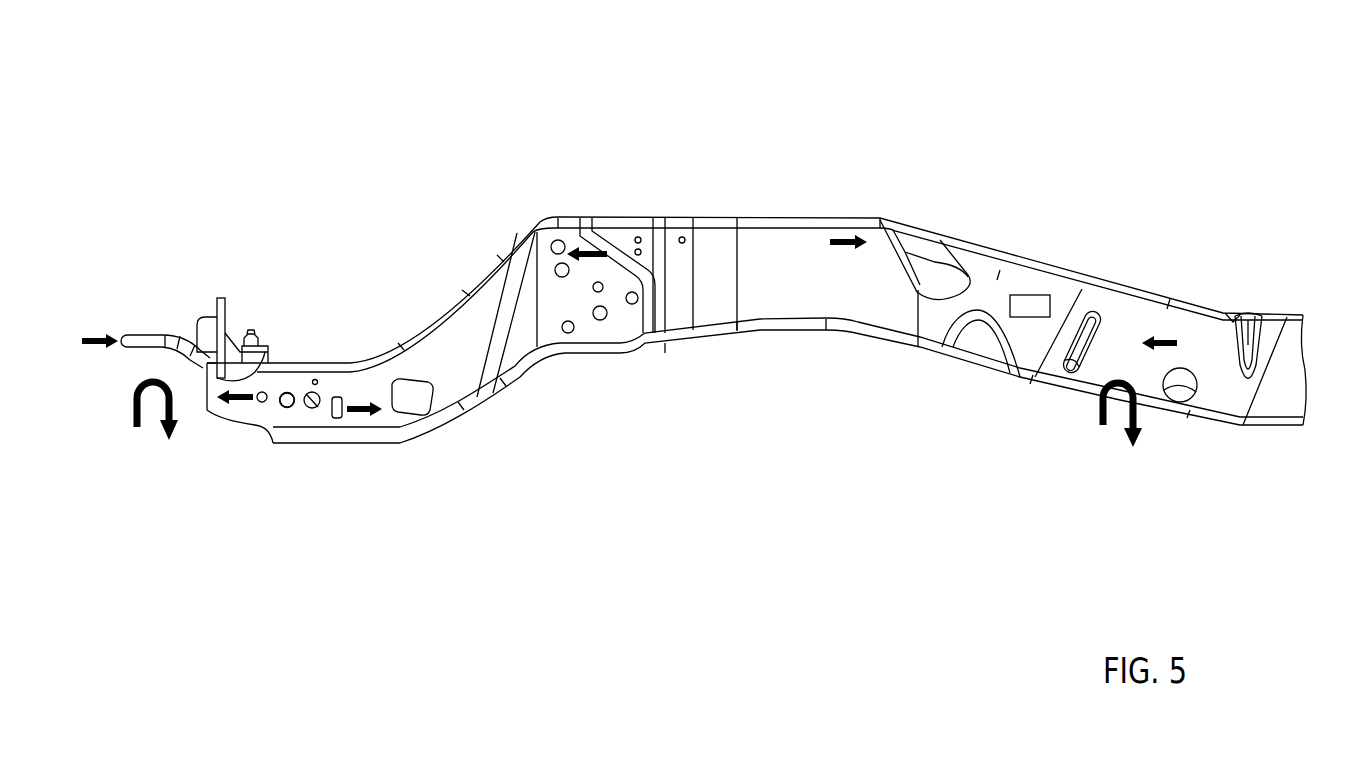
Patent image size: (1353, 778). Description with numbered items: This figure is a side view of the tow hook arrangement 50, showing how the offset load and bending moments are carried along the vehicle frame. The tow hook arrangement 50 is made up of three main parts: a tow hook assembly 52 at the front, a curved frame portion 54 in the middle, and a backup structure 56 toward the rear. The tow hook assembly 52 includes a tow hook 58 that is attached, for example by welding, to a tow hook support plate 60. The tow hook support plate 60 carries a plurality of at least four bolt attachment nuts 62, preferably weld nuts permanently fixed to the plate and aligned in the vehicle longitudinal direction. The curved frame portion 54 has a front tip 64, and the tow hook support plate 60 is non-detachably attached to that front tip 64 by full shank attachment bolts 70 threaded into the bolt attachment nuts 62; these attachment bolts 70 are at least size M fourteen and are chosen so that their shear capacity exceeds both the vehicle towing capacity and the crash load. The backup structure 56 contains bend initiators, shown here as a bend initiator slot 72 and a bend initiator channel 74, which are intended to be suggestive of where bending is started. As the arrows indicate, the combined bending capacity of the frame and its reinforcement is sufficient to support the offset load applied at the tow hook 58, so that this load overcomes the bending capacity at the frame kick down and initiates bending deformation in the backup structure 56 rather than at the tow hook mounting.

The tow hook arrangement 50 is at (1203, 122).
The tow hook assembly 52 is at (157, 238).
The curved frame portion 54 is at (871, 197).
The backup structure 56 is at (1283, 473).
The tow hook 58 is at (130, 337).
The tow hook support plate 60 is at (227, 308).
The bolt attachment nuts 62 is at (262, 360).
The front tip 64 is at (283, 412).
The full shank attachment bolts 70 is at (257, 332).
The bend initiator slot 72 is at (1087, 317).
The bend initiator channel 74 is at (1252, 317).